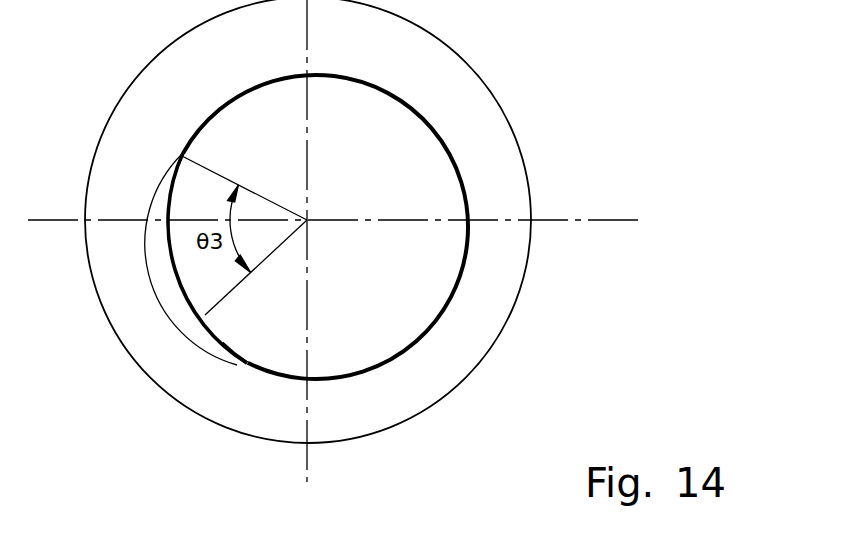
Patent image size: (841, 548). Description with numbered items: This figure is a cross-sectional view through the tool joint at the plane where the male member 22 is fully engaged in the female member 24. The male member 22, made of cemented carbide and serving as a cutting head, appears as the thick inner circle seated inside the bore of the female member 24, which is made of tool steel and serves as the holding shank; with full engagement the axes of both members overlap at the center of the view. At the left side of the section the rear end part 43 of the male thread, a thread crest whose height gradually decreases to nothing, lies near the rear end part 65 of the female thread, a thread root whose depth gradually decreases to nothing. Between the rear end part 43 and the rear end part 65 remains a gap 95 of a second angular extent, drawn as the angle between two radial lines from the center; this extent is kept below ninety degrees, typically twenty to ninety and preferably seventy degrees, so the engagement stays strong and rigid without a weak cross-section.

The male member 22 is at (372, 150).
The female member 24 is at (482, 140).
The rear end part 65 is at (155, 188).
The gap 95 is at (165, 283).
The rear end part 43 is at (222, 343).